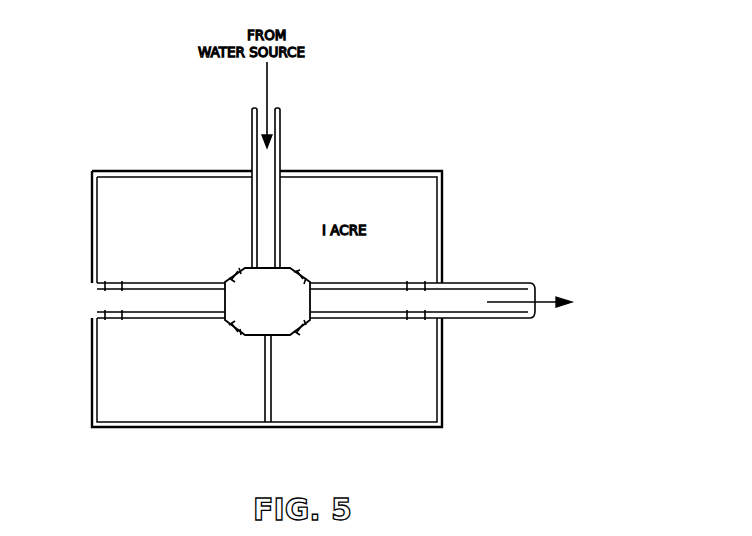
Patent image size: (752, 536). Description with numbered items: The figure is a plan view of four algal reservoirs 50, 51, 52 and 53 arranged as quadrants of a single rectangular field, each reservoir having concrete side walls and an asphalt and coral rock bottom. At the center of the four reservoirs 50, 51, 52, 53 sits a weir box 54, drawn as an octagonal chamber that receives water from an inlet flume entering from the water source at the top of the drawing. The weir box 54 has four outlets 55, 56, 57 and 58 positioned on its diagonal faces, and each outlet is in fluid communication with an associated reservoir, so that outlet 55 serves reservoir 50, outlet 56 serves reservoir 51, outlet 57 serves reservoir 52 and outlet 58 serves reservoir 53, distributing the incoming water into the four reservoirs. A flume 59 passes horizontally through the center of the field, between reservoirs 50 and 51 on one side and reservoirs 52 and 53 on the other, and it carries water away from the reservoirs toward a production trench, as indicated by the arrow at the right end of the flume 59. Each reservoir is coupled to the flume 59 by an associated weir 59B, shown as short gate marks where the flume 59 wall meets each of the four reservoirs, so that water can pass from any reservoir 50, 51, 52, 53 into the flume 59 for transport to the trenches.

The algal reservoir 50 is at (403, 225).
The algal reservoir 51 is at (127, 205).
The algal reservoir 52 is at (132, 388).
The algal reservoir 53 is at (390, 402).
The weir box 54 is at (278, 292).
The outlet 55 is at (324, 253).
The outlet 56 is at (240, 274).
The outlet 57 is at (238, 328).
The outlet 58 is at (301, 328).
The flume 59 is at (485, 288).
The weir 59B is at (106, 285).